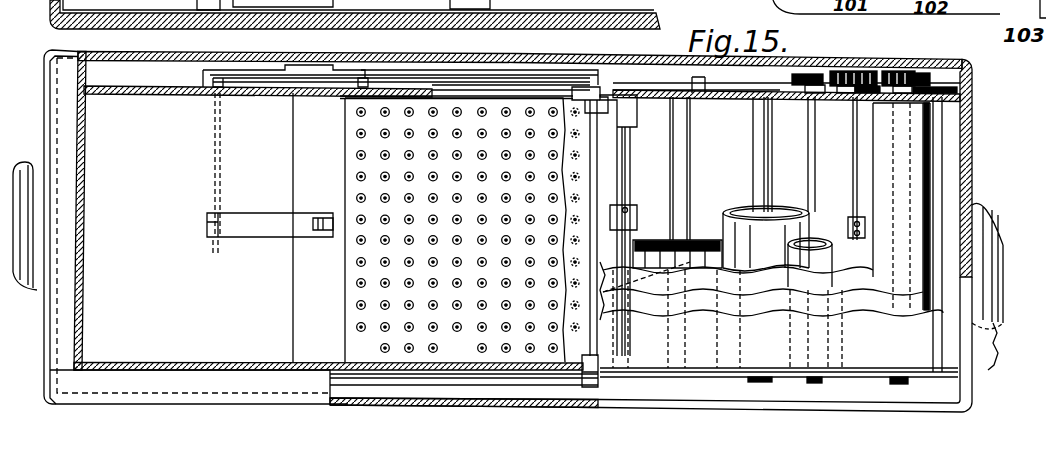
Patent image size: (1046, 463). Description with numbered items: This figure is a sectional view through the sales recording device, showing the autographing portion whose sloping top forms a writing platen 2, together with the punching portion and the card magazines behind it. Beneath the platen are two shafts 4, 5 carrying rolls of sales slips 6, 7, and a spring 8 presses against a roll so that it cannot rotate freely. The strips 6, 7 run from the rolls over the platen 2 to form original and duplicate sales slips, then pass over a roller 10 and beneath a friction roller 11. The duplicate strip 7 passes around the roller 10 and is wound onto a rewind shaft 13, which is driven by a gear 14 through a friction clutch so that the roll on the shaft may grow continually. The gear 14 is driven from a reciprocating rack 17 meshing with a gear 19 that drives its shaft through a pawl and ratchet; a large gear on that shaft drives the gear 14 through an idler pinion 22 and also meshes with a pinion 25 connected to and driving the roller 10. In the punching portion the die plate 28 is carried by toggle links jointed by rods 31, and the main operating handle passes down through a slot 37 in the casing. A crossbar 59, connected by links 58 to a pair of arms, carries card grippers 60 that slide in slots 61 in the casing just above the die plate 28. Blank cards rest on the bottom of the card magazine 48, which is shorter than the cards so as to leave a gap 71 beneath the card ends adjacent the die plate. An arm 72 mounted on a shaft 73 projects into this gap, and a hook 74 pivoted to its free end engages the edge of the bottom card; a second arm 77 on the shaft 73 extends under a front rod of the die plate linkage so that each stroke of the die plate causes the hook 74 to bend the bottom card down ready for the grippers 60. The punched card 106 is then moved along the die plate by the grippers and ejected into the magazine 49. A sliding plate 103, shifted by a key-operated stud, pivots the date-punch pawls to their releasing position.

The writing platen 2 is at (782, 290).
The shaft 4 is at (756, 147).
The shaft 5 is at (690, 118).
The original sales slip strip 6 is at (712, 218).
The duplicate sales slip strip 7 is at (697, 230).
The spring 8 is at (837, 230).
The roller 10 is at (885, 175).
The friction roller 11 is at (940, 127).
The rewind shaft 13 is at (817, 157).
The gear 14 is at (797, 74).
The reciprocating rack 17 is at (687, 90).
The gear 19 is at (884, 71).
The idler pinion 22 is at (846, 71).
The pinion 25 is at (928, 62).
The die plate 28 is at (446, 338).
The rod 31 is at (630, 192).
The slot 37 is at (362, 77).
The card magazine 48 is at (78, 143).
The magazine 49 is at (43, 108).
The link 58 is at (478, 77).
The crossbar 59 is at (603, 163).
The card gripper 60 is at (593, 85).
The slot 61 is at (495, 92).
The gap 71 is at (304, 306).
The arm 72 is at (255, 226).
The shaft 73 is at (215, 155).
The hook 74 is at (323, 216).
The arm 77 is at (283, 80).
The sliding plate 103 is at (990, 258).
The punched card 106 is at (563, 209).